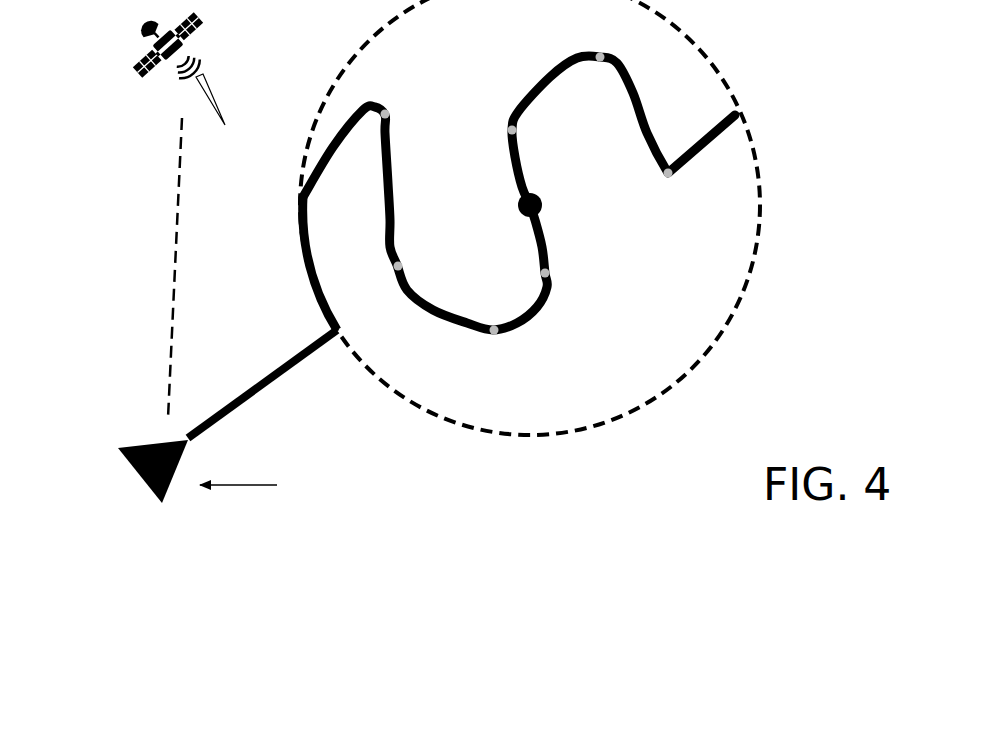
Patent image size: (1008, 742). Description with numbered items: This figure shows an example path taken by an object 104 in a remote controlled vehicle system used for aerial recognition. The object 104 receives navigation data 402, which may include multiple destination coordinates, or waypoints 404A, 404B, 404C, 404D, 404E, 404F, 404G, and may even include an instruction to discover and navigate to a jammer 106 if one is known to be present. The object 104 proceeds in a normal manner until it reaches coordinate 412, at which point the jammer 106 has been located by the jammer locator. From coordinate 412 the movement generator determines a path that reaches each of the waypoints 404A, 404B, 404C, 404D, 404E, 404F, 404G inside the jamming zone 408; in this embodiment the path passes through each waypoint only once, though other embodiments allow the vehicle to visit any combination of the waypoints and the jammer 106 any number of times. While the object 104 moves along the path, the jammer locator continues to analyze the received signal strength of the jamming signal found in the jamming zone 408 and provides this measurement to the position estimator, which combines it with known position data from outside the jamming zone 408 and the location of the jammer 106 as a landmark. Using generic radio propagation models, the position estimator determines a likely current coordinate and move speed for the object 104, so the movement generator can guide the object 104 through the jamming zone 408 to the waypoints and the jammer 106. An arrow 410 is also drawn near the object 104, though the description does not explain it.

The object 104 is at (98, 457).
The jammer 106 is at (550, 203).
The navigation data 402 is at (165, 240).
The waypoint 404A is at (395, 105).
The waypoint 404B is at (407, 270).
The waypoint 404C is at (495, 342).
The waypoint 404D is at (555, 268).
The waypoint 404E is at (503, 137).
The waypoint 404F is at (601, 53).
The waypoint 404G is at (668, 165).
The jamming zone 408 is at (530, 217).
The direction of travel 410 is at (266, 486).
The coordinate 412 is at (298, 195).